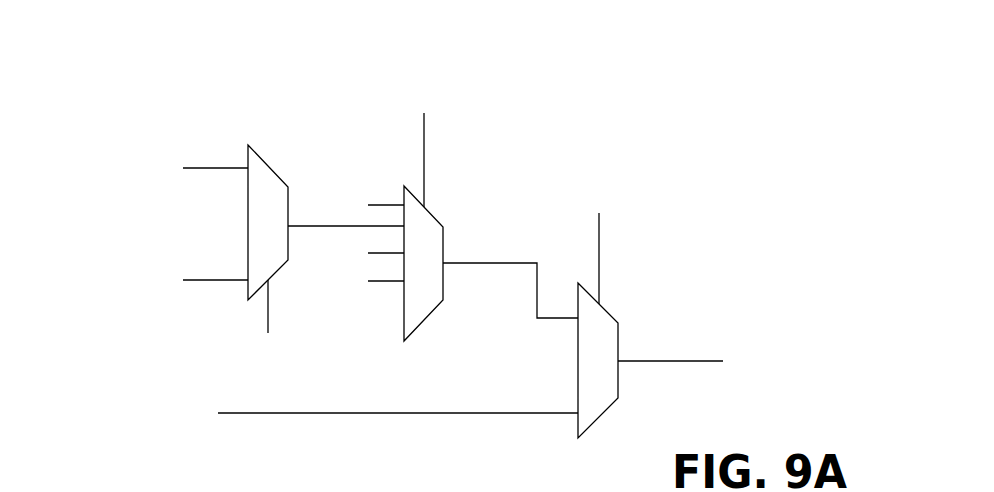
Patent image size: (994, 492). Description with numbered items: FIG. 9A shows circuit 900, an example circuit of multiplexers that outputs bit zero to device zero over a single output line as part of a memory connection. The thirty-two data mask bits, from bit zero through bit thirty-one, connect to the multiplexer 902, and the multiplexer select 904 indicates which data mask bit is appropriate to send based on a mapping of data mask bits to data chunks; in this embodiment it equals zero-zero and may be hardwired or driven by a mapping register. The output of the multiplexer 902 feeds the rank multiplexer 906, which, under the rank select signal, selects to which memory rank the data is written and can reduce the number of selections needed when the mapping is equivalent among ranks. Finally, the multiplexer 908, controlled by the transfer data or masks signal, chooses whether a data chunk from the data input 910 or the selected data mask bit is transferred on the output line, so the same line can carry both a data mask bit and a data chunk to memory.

The circuit 900 is at (698, 68).
The multiplexer 902 is at (273, 170).
The multiplexer select 904 is at (267, 317).
The rank multiplexer 906 is at (433, 216).
The multiplexer 908 is at (668, 300).
The data input 910 is at (398, 400).